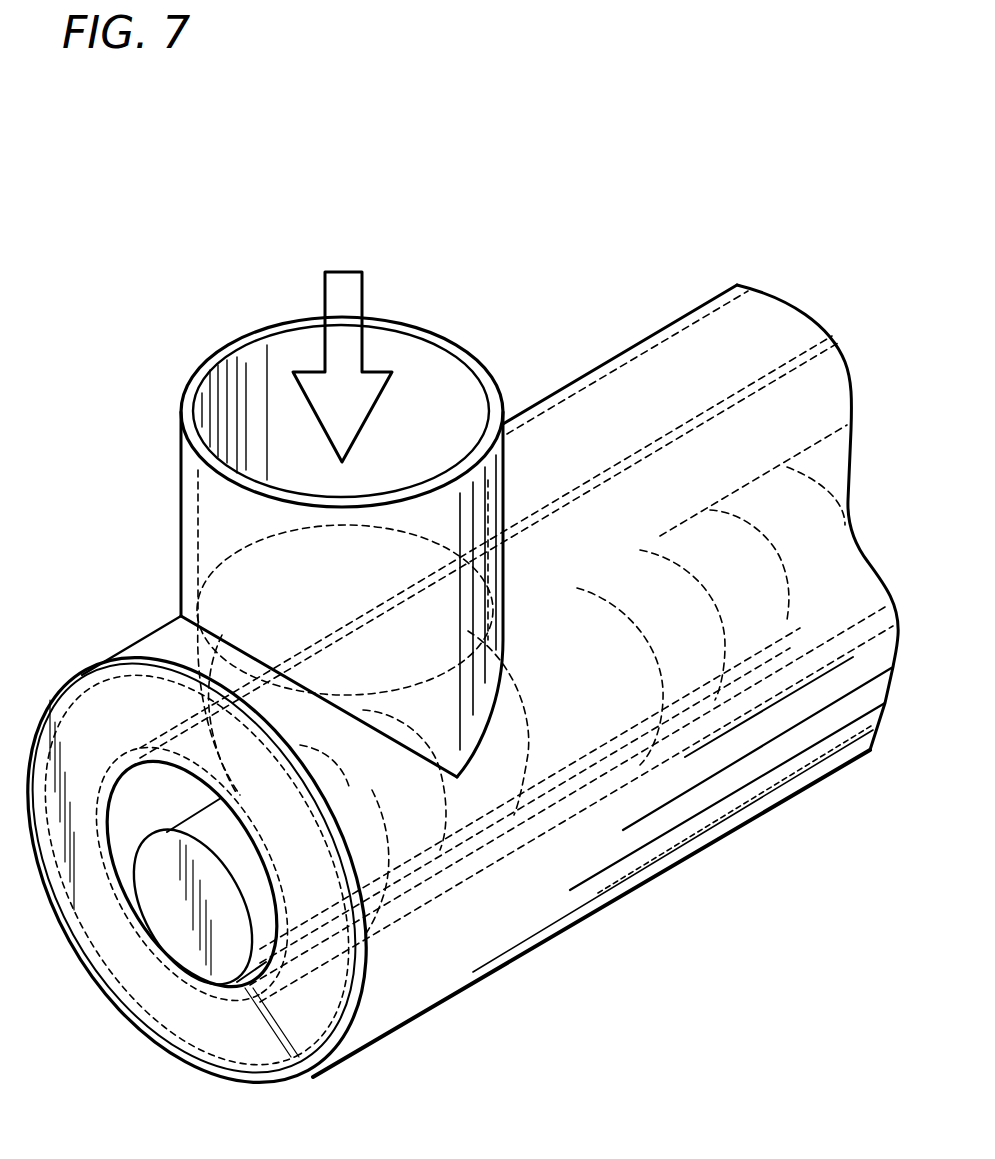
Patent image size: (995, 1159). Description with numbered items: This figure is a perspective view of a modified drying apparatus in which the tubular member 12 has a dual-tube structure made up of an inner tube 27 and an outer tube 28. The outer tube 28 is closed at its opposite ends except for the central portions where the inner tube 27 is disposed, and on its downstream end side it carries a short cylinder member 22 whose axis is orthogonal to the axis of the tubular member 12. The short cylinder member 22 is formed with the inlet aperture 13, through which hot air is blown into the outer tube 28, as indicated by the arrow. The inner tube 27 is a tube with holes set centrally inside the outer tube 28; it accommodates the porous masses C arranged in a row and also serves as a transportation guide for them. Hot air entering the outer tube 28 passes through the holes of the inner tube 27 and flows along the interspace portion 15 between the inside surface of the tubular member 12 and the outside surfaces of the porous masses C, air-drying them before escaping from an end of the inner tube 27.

The tubular member 12 is at (157, 633).
The inlet aperture 13 is at (250, 388).
The interspace portion 15 is at (757, 805).
The short cylinder member 22 is at (223, 523).
The inner tube 27 is at (703, 417).
The outer tube 28 is at (552, 393).
The porous masses C is at (410, 826).